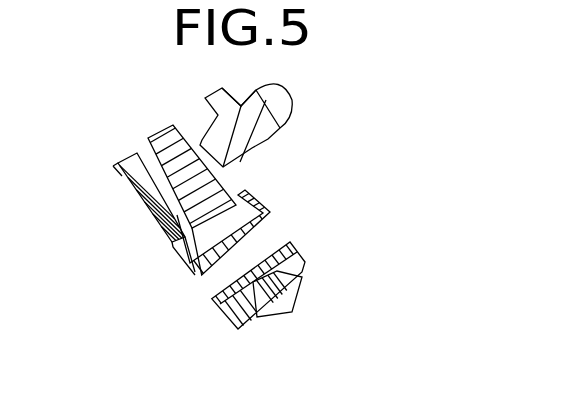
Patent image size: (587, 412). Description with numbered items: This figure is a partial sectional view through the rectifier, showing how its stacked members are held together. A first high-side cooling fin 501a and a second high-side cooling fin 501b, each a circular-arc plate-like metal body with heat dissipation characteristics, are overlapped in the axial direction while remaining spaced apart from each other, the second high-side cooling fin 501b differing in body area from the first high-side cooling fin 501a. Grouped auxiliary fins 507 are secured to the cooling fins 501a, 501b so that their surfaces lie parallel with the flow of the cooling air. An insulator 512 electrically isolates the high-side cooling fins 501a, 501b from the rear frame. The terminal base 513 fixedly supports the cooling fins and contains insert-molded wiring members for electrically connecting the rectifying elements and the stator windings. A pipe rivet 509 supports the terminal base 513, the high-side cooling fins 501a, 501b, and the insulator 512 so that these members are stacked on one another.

The first high-side cooling fin 501a is at (238, 98).
The second high-side cooling fin 501b is at (226, 192).
The auxiliary fins 507 is at (262, 137).
The pipe rivet 509 is at (305, 252).
The insulator 512 is at (302, 277).
The terminal base 513 is at (140, 205).